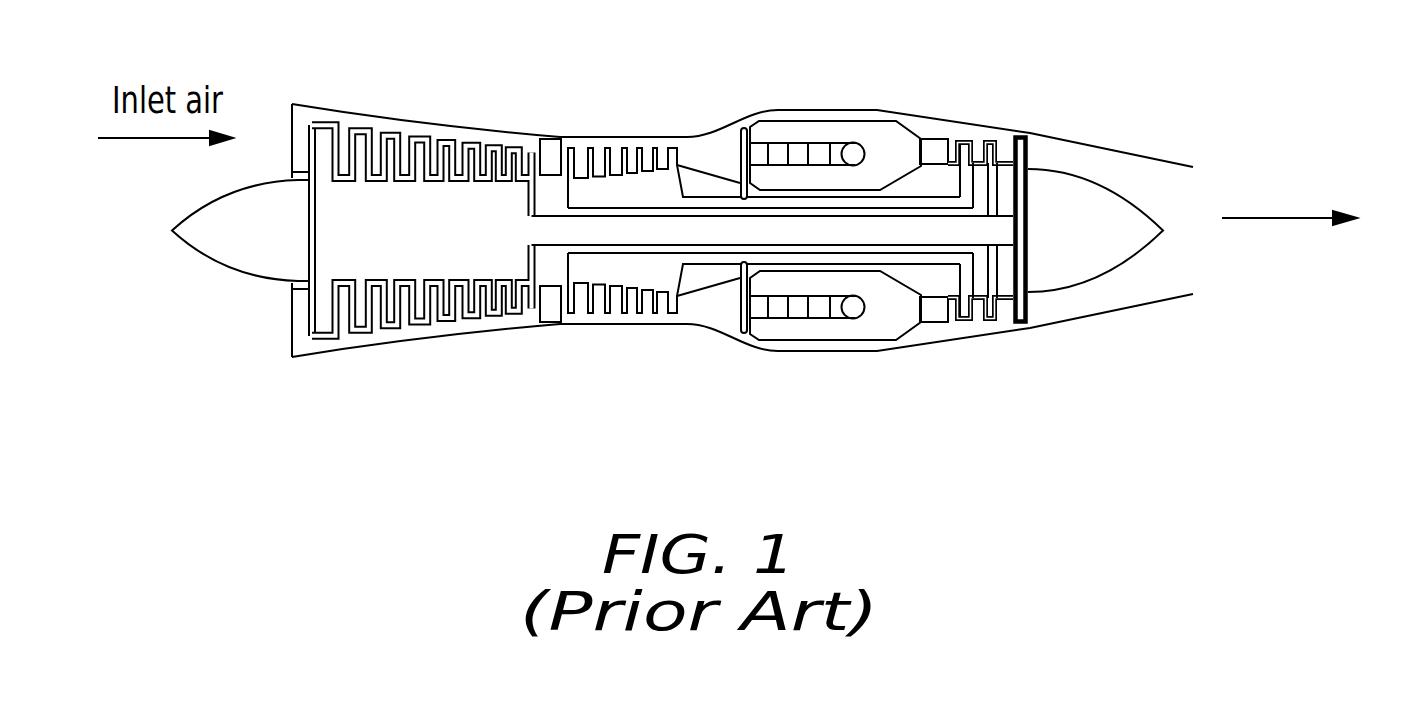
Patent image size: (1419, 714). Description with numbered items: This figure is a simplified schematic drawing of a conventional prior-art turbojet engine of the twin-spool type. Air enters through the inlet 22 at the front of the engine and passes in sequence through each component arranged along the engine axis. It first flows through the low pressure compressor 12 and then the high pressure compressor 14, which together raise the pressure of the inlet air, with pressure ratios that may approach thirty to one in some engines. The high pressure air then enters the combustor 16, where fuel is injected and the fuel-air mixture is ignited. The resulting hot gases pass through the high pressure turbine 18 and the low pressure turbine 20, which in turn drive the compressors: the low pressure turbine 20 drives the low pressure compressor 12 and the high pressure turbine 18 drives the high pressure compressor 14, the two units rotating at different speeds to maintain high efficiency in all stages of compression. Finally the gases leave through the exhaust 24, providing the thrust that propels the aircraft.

The low pressure compressor 12 is at (373, 125).
The high pressure compressor 14 is at (627, 323).
The combustor 16 is at (787, 127).
The high pressure turbine 18 is at (963, 313).
The low pressure turbine 20 is at (1020, 138).
The inlet 22 is at (245, 337).
The exhaust 24 is at (1277, 107).